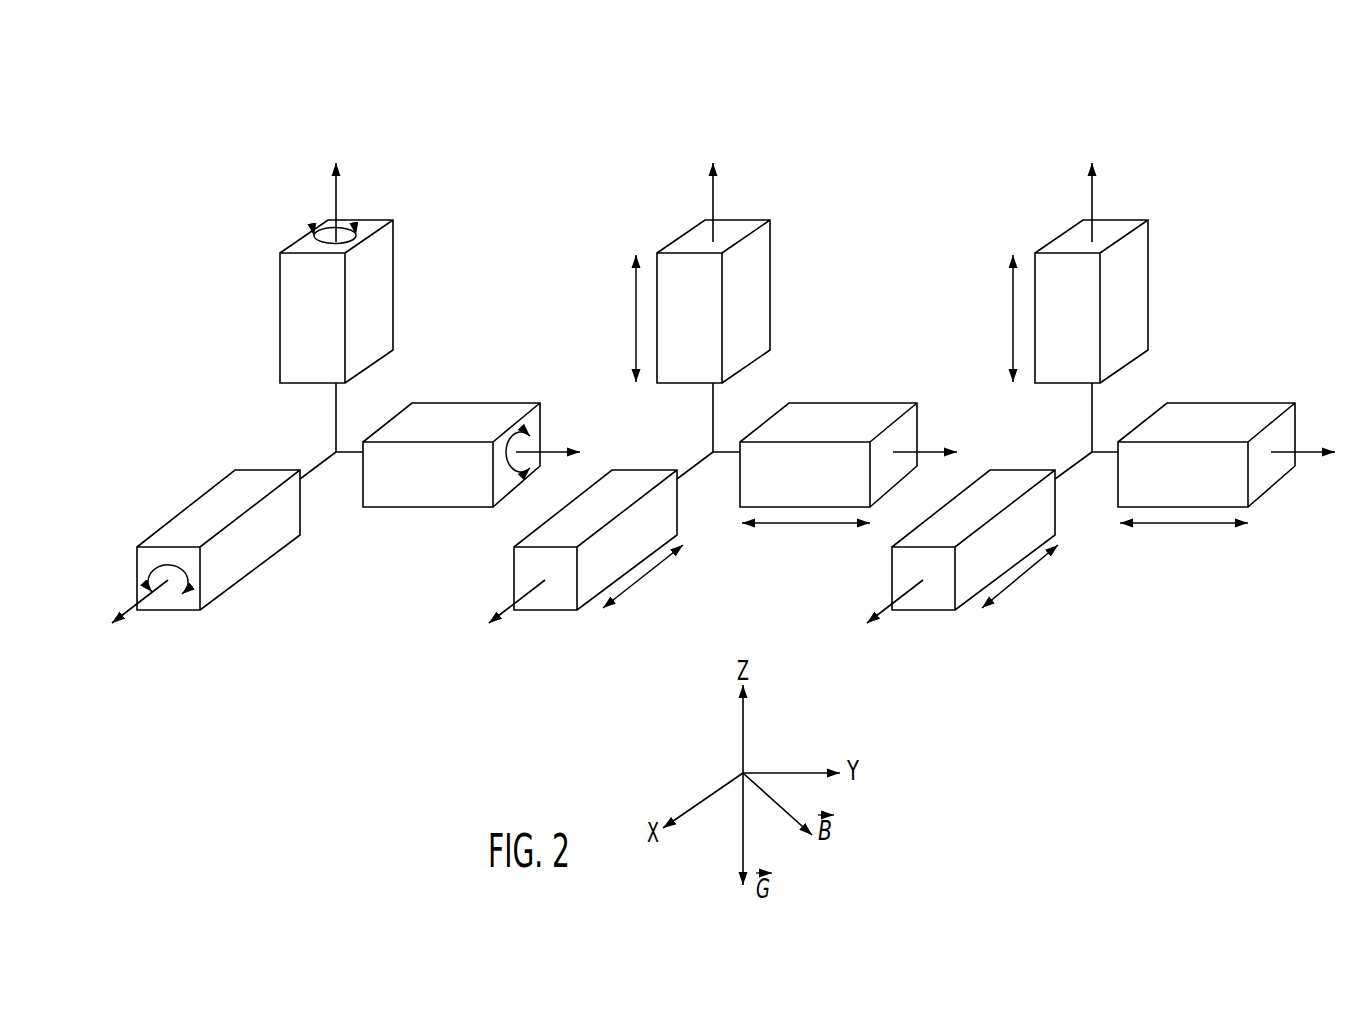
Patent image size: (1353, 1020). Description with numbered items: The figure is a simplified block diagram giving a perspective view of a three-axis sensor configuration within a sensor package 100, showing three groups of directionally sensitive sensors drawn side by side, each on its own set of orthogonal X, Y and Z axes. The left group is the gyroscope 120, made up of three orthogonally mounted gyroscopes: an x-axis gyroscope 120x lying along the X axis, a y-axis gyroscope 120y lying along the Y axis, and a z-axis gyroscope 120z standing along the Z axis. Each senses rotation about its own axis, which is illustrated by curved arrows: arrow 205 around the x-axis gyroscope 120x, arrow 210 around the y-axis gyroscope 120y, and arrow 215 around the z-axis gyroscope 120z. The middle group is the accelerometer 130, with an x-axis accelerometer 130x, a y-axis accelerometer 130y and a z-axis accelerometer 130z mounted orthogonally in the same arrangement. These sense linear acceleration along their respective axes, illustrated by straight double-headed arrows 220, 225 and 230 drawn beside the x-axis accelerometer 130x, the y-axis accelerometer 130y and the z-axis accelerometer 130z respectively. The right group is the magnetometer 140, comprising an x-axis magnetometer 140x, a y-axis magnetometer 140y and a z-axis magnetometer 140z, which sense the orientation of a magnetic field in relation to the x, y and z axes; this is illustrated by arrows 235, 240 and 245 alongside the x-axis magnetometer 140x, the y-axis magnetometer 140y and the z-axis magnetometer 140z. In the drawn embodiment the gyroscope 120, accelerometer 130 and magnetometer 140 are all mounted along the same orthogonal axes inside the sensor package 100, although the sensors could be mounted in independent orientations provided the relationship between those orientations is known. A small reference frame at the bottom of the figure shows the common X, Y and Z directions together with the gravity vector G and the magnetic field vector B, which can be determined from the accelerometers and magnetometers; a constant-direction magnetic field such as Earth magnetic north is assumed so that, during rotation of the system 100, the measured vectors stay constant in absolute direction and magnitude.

The sensor package 100 is at (1248, 146).
The gyroscope 120 is at (218, 238).
The accelerometer 130 is at (712, 397).
The magnetometer 140 is at (1089, 397).
The x-axis gyroscope 120x is at (188, 600).
The y-axis gyroscope 120y is at (483, 410).
The z-axis gyroscope 120z is at (393, 290).
The x-axis accelerometer 130x is at (595, 568).
The y-axis accelerometer 130y is at (828, 432).
The z-axis accelerometer 130z is at (746, 301).
The x-axis magnetometer 140x is at (973, 568).
The y-axis magnetometer 140y is at (1206, 432).
The z-axis magnetometer 140z is at (1124, 301).
The rotation arrow about x-axis 205 is at (155, 562).
The rotation arrow about y-axis 210 is at (530, 432).
The rotation arrow about z-axis 215 is at (312, 233).
The x-axis linear acceleration arrow 220 is at (649, 576).
The y-axis linear acceleration arrow 225 is at (806, 552).
The z-axis linear acceleration arrow 230 is at (606, 318).
The x-axis magnetic field arrow 235 is at (1027, 581).
The y-axis magnetic field arrow 240 is at (1184, 552).
The z-axis magnetic field arrow 245 is at (984, 318).